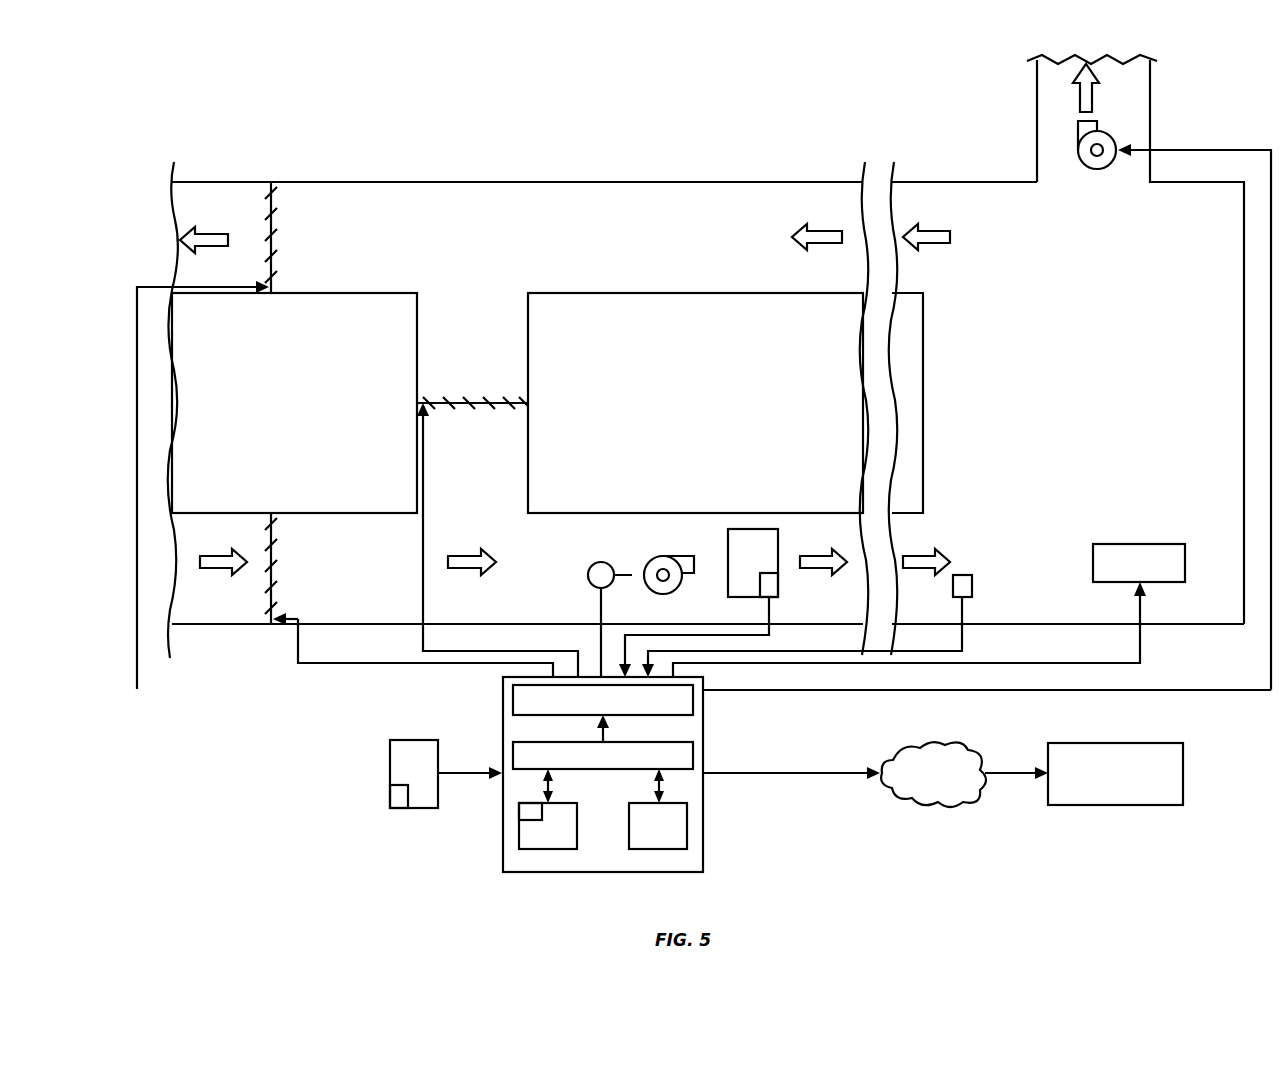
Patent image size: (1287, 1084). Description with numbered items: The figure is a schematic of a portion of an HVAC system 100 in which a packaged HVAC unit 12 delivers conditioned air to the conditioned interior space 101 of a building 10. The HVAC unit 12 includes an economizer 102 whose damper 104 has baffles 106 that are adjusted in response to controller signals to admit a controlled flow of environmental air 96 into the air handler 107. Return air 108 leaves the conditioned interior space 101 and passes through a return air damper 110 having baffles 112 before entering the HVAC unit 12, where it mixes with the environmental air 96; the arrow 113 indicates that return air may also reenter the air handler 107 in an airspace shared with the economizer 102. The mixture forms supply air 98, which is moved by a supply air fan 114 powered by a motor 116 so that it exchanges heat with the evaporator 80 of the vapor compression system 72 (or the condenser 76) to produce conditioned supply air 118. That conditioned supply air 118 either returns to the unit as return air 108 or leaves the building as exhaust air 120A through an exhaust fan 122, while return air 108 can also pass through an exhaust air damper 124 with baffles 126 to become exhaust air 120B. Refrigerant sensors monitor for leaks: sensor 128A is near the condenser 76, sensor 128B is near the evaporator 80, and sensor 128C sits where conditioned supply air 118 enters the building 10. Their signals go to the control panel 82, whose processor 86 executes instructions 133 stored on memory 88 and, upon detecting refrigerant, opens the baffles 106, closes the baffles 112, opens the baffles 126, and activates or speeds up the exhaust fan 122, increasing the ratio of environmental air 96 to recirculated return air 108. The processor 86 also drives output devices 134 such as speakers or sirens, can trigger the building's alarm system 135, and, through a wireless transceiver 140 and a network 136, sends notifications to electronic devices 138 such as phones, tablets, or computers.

The building 10 is at (985, 160).
The HVAC unit 12 is at (607, 158).
The vapor compression system 72 is at (752, 512).
The condenser 76 is at (414, 757).
The evaporator 80 is at (753, 545).
The control panel 82 is at (703, 730).
The processor 86 is at (603, 759).
The memory 88 is at (548, 826).
The environmental air 96 is at (218, 554).
The supply air 98 is at (478, 550).
The HVAC system 100 is at (197, 95).
The conditioned interior space 101 is at (1055, 274).
The economizer 102 is at (204, 503).
The damper 104 is at (298, 562).
The baffles 106 is at (266, 597).
The air handler 107 is at (742, 160).
The return air 108 is at (808, 232).
The return air damper 110 is at (468, 376).
The baffles 112 is at (487, 412).
The arrow 113 is at (466, 512).
The supply air fan 114 is at (661, 594).
The motor 116 is at (604, 562).
The conditioned supply air 118 is at (832, 550).
The exhaust air 120A is at (1094, 97).
The exhaust air 120B is at (195, 246).
The exhaust fan 122 is at (1100, 170).
The exhaust air damper 124 is at (298, 242).
The baffles 126 is at (276, 212).
The sensor 128A is at (390, 796).
The sensor 128B is at (778, 588).
The sensor 128C is at (972, 582).
The instructions 133 is at (524, 814).
The output devices 134 is at (693, 690).
The alarm system 135 is at (1139, 544).
The network 136 is at (940, 744).
The electronic devices 138 is at (1184, 770).
The wireless transceiver 140 is at (688, 832).